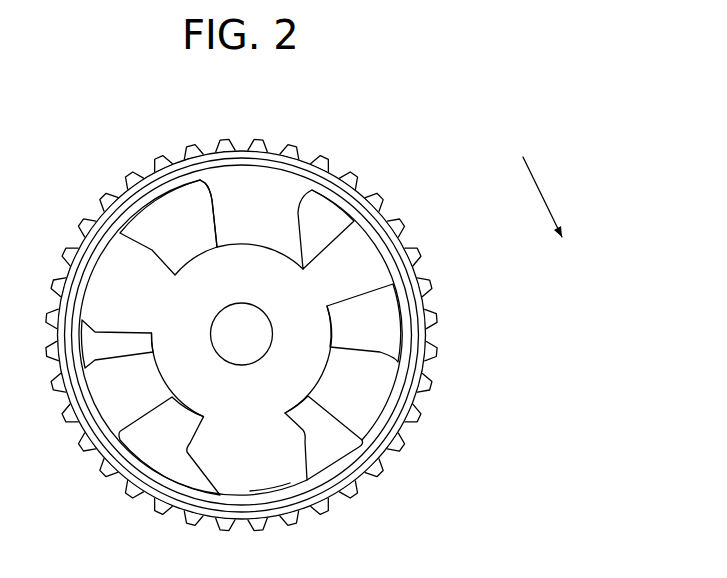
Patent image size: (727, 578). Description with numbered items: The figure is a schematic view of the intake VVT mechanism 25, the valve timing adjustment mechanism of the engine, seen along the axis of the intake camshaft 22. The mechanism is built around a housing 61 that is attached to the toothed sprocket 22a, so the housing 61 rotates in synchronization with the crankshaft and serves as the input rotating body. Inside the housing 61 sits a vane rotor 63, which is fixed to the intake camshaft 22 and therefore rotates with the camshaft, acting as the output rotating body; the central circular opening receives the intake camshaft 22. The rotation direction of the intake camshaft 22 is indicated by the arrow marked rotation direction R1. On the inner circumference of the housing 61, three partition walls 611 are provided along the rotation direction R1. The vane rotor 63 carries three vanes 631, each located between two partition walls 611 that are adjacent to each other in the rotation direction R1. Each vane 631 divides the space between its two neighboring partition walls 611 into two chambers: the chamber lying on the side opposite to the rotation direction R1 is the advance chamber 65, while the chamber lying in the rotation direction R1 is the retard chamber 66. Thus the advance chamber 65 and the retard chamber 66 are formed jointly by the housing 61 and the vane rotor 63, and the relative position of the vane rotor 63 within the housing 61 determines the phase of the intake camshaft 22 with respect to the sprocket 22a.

The intake VVT mechanism 25 is at (241, 307).
The sprocket 22a is at (360, 175).
The intake camshaft 22 is at (243, 363).
The housing 61 is at (285, 182).
The partition wall 611 is at (218, 202).
The vane rotor 63 is at (200, 398).
The vane 631 is at (268, 478).
The advance chamber 65 is at (323, 432).
The retard chamber 66 is at (165, 437).
The rotation direction R1 is at (543, 187).